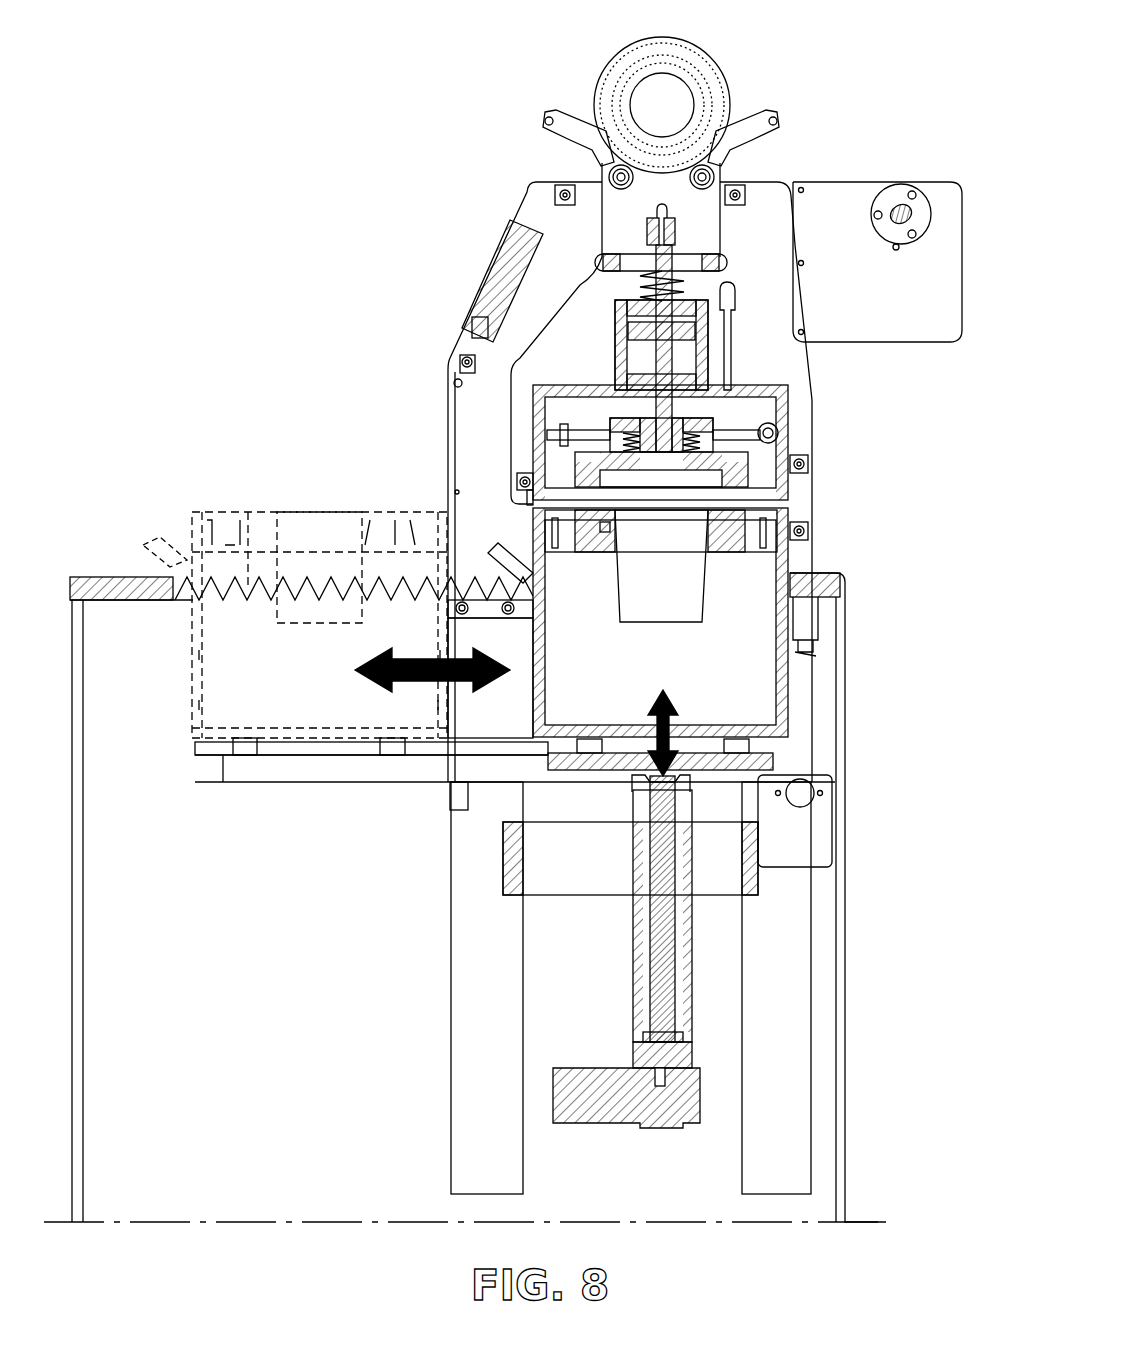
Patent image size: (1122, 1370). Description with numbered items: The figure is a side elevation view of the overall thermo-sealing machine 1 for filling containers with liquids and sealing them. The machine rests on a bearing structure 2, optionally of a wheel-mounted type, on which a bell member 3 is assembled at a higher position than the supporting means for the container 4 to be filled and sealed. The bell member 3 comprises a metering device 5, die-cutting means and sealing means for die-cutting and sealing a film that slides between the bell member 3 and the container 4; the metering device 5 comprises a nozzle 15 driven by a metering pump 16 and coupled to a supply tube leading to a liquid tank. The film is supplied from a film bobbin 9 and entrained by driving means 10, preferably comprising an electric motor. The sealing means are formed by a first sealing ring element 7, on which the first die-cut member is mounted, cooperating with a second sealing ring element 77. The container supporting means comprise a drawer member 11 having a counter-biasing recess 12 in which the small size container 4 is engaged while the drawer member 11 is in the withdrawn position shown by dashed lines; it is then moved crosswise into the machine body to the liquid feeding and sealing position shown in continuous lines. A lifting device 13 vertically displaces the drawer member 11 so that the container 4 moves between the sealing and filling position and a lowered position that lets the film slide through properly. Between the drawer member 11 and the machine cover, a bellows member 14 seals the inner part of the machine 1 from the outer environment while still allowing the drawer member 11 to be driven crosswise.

The thermo-sealing machine 1 is at (309, 203).
The bearing structure 2 is at (837, 940).
The bell member 3 is at (790, 427).
The container 4 is at (702, 603).
The metering device 5 is at (711, 330).
The first sealing ring element 7 is at (610, 450).
The film bobbin 9 is at (617, 68).
The entraining or driving means 10 is at (850, 197).
The drawer member 11 is at (790, 560).
The counter-biasing recess 12 is at (595, 542).
The lifting device 13 is at (667, 977).
The bellows member 14 is at (325, 572).
The nozzle 15 is at (812, 470).
The metering pump 16 is at (647, 232).
The second sealing ring element 77 is at (576, 469).